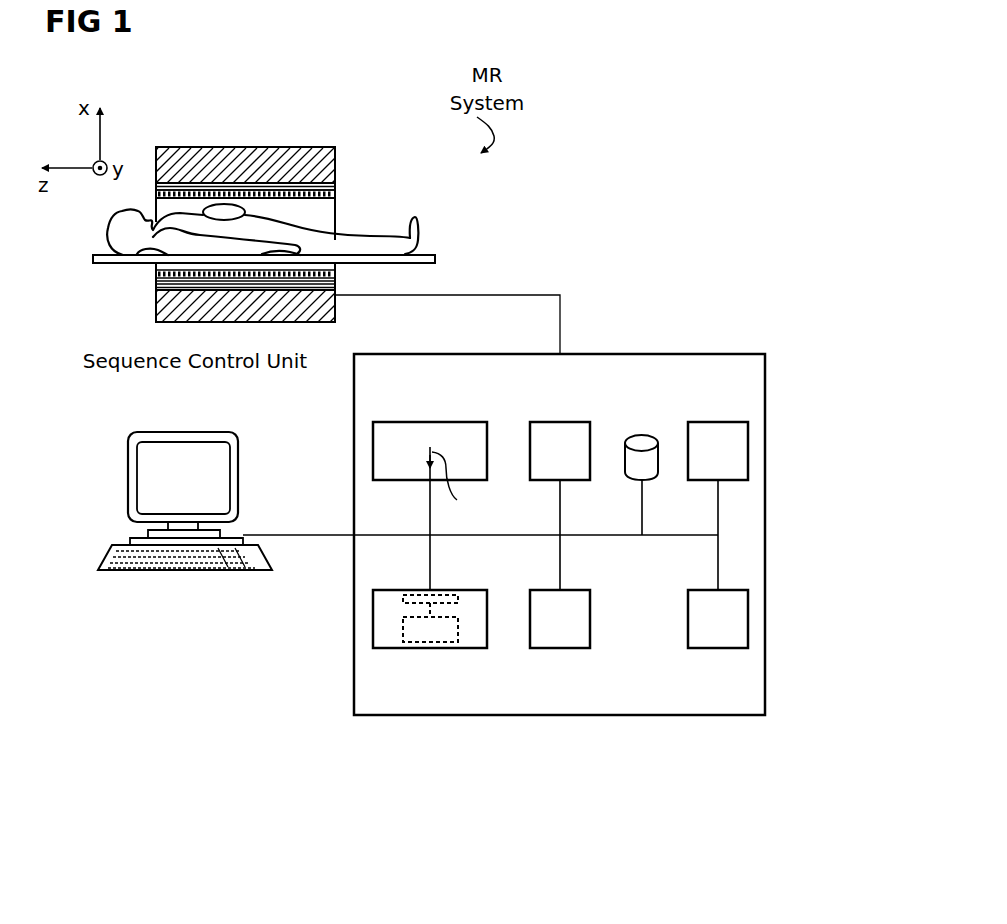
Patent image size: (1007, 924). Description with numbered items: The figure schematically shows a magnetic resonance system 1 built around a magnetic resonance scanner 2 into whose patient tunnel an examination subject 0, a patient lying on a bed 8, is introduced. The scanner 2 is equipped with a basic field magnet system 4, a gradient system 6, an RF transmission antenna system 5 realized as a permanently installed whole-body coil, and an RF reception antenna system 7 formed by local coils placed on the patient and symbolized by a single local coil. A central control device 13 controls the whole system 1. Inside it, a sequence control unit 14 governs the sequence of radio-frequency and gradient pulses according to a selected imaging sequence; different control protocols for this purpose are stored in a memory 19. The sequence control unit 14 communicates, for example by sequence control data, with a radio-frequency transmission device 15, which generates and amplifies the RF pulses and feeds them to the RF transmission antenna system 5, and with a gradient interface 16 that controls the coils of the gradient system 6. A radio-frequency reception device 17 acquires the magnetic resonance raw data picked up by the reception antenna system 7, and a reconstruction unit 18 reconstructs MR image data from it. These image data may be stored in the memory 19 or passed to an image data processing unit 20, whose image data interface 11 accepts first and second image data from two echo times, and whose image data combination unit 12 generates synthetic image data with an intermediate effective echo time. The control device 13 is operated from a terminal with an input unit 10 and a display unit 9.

The examination subject 0 is at (384, 243).
The magnetic resonance system 1 is at (618, 130).
The magnetic resonance scanner 2 is at (176, 138).
The basic field magnet system 4 is at (317, 147).
The RF transmission antenna system 5 is at (245, 196).
The gradient system 6 is at (280, 196).
The RF reception antenna system 7 is at (223, 205).
The bed 8 is at (437, 258).
The display unit 9 is at (183, 432).
The input unit 10 is at (182, 572).
The image data interface 11 is at (417, 595).
The image data combination unit 12 is at (423, 642).
The central control device 13 is at (638, 354).
The sequence control unit 14 is at (293, 372).
The radio-frequency transmission device 15 is at (562, 422).
The gradient interface 16 is at (548, 832).
The radio-frequency reception device 17 is at (722, 422).
The reconstruction unit 18 is at (718, 648).
The memory 19 is at (642, 432).
The image data processing unit 20 is at (465, 648).